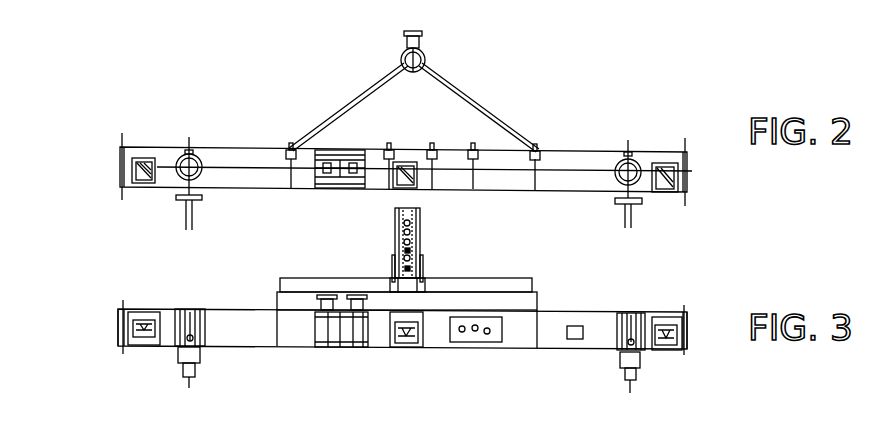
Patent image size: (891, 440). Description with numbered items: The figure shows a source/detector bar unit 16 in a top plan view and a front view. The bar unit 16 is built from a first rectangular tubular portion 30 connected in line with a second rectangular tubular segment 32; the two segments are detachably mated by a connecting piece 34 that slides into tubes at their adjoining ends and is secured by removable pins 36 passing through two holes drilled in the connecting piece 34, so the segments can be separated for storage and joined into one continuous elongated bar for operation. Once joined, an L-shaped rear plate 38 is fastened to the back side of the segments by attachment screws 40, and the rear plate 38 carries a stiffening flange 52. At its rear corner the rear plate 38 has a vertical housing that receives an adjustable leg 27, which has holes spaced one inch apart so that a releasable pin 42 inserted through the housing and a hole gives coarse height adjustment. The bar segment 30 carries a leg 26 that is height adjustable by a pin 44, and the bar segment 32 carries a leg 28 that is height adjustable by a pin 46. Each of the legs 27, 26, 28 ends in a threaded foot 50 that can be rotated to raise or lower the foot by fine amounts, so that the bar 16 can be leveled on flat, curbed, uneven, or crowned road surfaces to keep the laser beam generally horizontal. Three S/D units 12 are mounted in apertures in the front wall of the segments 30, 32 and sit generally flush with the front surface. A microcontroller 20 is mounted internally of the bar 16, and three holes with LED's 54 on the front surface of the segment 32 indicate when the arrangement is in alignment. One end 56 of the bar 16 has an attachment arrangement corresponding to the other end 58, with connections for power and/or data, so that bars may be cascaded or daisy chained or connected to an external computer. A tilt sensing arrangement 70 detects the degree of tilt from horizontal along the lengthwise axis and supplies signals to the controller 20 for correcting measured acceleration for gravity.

In FIG. 2, the S/D unit 12 is at (128, 183).
In FIG. 3, the S/D unit 12 is at (135, 346).
In FIG. 2, the S/D bar unit 16 is at (250, 106).
In FIG. 3, the S/D bar unit 16 is at (243, 298).
In FIG. 3, the microcontroller 20 is at (495, 343).
In FIG. 2, the leg 26 is at (190, 150).
In FIG. 3, the leg 26 is at (201, 356).
In FIG. 2, the adjustable leg 27 is at (430, 56).
In FIG. 2, the leg 28 is at (637, 154).
In FIG. 3, the leg 28 is at (642, 363).
In FIG. 2, the first rectangular tubular portion 30 is at (243, 184).
In FIG. 2, the second rectangular tubular segment 32 is at (510, 186).
In FIG. 2, the connecting piece 34 is at (333, 186).
In FIG. 3, the connecting piece 34 is at (341, 329).
In FIG. 3, the removable pins 36 is at (327, 295).
In FIG. 2, the L-shaped rear plate 38 is at (486, 110).
In FIG. 2, the attachment screws 40 is at (290, 145).
In FIG. 2, the releasable pin 42 is at (410, 32).
In FIG. 2, the pin 44 is at (183, 202).
In FIG. 2, the pin 46 is at (635, 206).
In FIG. 3, the threaded foot 50 is at (193, 378).
In FIG. 2, the stiffening flange 52 is at (366, 74).
In FIG. 3, the LED's 54 is at (462, 332).
In FIG. 3, the end 56 is at (687, 328).
In FIG. 3, the other end 58 is at (118, 325).
In FIG. 3, the tilt and/or mass sensing arrangement 70 is at (575, 325).